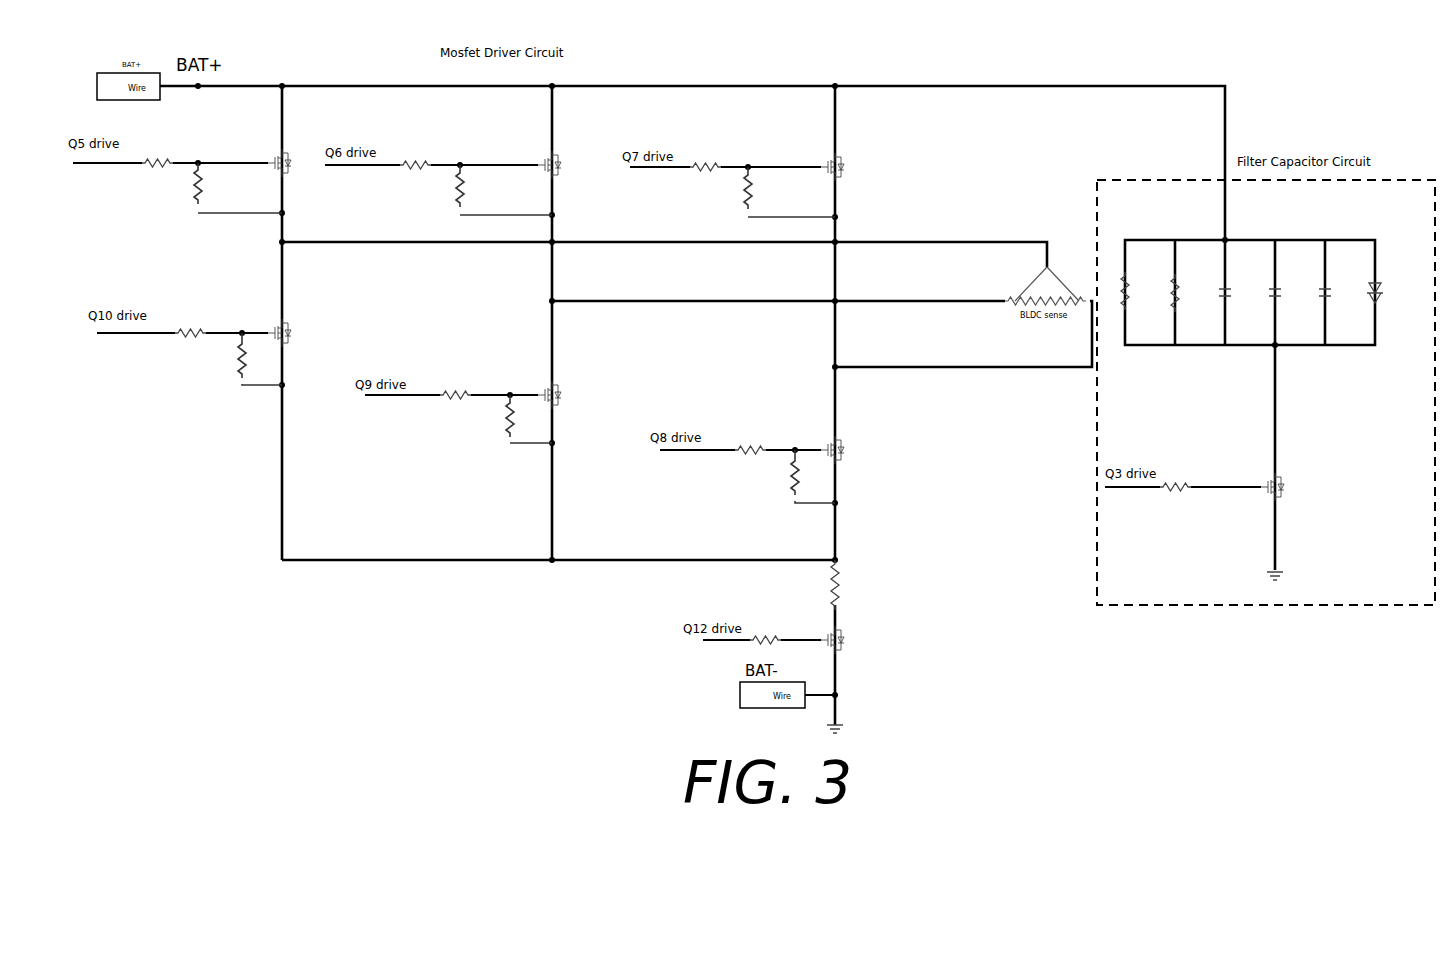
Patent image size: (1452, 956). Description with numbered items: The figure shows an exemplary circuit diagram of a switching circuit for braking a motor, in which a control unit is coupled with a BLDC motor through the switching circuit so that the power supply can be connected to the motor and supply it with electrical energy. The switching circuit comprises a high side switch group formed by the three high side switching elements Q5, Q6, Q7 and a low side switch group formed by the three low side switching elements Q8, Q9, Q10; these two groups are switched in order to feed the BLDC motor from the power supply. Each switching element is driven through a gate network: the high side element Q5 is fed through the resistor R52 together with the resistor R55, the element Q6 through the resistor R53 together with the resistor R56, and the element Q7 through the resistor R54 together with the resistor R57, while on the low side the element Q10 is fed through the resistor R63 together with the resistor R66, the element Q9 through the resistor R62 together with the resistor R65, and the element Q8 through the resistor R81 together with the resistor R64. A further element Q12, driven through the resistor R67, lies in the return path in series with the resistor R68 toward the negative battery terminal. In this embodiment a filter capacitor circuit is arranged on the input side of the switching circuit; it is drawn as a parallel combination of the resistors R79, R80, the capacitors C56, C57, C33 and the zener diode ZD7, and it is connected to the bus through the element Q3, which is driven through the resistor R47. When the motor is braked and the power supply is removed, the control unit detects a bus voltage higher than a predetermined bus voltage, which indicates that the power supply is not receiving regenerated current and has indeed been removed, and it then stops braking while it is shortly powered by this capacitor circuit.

The gate resistor R52 is at (156, 154).
The gate pull-down resistor R55 is at (238, 188).
The high side switching element Q5 is at (290, 162).
The gate resistor R53 is at (415, 157).
The gate pull-down resistor R56 is at (504, 190).
The high side switching element Q6 is at (562, 163).
The gate resistor R54 is at (705, 158).
The gate pull-down resistor R57 is at (789, 192).
The high side switching element Q7 is at (846, 164).
The gate resistor R63 is at (190, 324).
The gate pull-down resistor R66 is at (260, 359).
The low side switching element Q10 is at (293, 332).
The gate resistor R62 is at (455, 385).
The gate pull-down resistor R65 is at (529, 419).
The low side switching element Q9 is at (562, 393).
The gate resistor R81 is at (750, 442).
The gate pull-down resistor R64 is at (813, 476).
The low side switching element Q8 is at (845, 448).
The current sensor resistor R68 is at (888, 589).
The gate resistor R67 is at (766, 633).
The MOSFET Q12 is at (848, 640).
The filter resistor R79 is at (1136, 291).
The filter resistor R80 is at (1187, 293).
The filter capacitor C56 is at (1238, 297).
The filter capacitor C57 is at (1289, 297).
The filter capacitor C33 is at (1339, 293).
The zener diode ZD7 is at (1391, 294).
The gate resistor R47 is at (1175, 479).
The MOSFET Q3 is at (1260, 482).